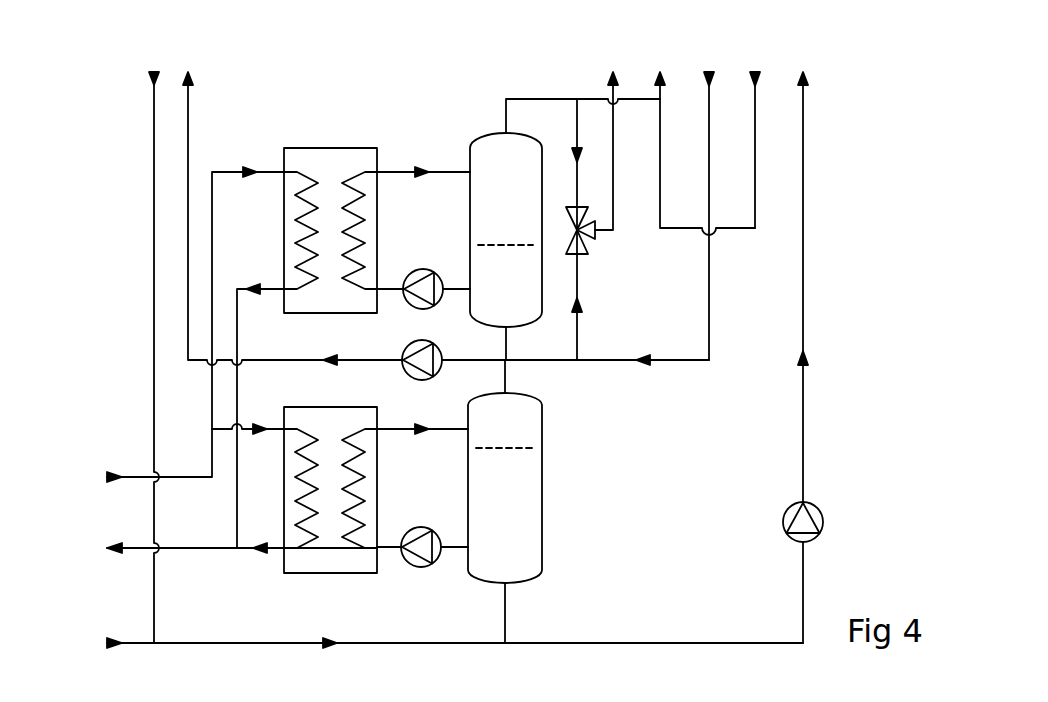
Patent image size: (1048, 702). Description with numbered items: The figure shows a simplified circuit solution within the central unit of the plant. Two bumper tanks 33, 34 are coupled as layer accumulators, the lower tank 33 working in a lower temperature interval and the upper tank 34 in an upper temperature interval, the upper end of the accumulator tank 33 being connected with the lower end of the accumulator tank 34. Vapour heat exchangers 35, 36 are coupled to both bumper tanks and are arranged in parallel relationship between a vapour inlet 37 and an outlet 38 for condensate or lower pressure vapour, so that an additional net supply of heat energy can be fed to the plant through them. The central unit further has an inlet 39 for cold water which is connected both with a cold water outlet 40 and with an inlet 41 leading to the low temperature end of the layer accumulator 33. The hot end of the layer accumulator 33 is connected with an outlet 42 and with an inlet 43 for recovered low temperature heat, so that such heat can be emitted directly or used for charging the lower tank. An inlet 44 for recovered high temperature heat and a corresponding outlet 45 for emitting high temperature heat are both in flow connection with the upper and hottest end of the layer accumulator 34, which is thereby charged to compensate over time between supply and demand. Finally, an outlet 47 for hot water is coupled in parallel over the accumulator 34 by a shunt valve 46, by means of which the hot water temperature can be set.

The bumper tank 33 is at (532, 541).
The bumper tank 34 is at (480, 150).
The vapour heat exchanger 35 is at (343, 572).
The vapour heat exchanger 36 is at (323, 156).
The vapour inlet 37 is at (125, 476).
The outlet for condensate or lower pressure vapour 38 is at (122, 545).
The inlet for cold water 39 is at (122, 642).
The cold water outlet 40 is at (808, 86).
The inlet 41 is at (152, 91).
The outlet 42 is at (190, 92).
The inlet for recovered low temperature heat 43 is at (707, 86).
The inlet for recovered high temperature heat 44 is at (752, 86).
The outlet for the emitting of high temperature heat 45 is at (657, 86).
The shunt valve 46 is at (583, 255).
The outlet for hot water 47 is at (612, 86).